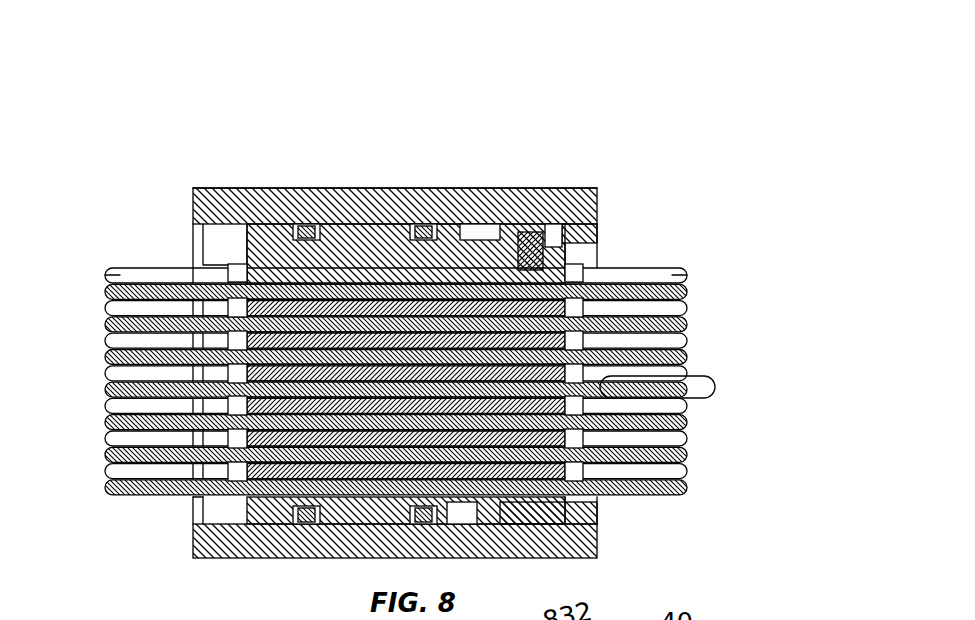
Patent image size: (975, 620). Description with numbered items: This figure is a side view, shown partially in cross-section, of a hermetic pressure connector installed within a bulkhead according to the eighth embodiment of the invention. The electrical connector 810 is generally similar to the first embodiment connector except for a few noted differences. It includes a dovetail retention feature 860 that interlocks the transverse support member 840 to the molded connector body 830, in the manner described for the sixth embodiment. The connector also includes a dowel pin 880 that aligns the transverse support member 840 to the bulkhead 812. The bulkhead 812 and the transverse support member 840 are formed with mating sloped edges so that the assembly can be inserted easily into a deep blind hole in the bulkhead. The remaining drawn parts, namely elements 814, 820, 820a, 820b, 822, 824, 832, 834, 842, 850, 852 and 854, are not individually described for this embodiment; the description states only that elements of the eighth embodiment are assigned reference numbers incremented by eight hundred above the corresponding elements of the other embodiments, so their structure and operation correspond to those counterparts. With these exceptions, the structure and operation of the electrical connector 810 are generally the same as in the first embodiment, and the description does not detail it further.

The electrical connector 810 is at (186, 520).
The bulkhead 812 is at (405, 190).
The housing end wall 814 is at (598, 222).
The contact pins 820 is at (620, 268).
The first pin end 820a is at (108, 290).
The second pin end 820b is at (690, 290).
The retaining nut 822 is at (228, 272).
The top cap 824 is at (372, 190).
The molded connector body 830 is at (197, 190).
The insulator block 832 is at (243, 222).
The seal groove 834 is at (305, 226).
The transverse support member 840 is at (480, 232).
The retaining ring 842 is at (588, 265).
The spacer 850 is at (570, 248).
The end block 852 is at (578, 226).
The contact stack 854 is at (573, 367).
The dovetail retention feature 860 is at (450, 230).
The dowel pin 880 is at (525, 233).